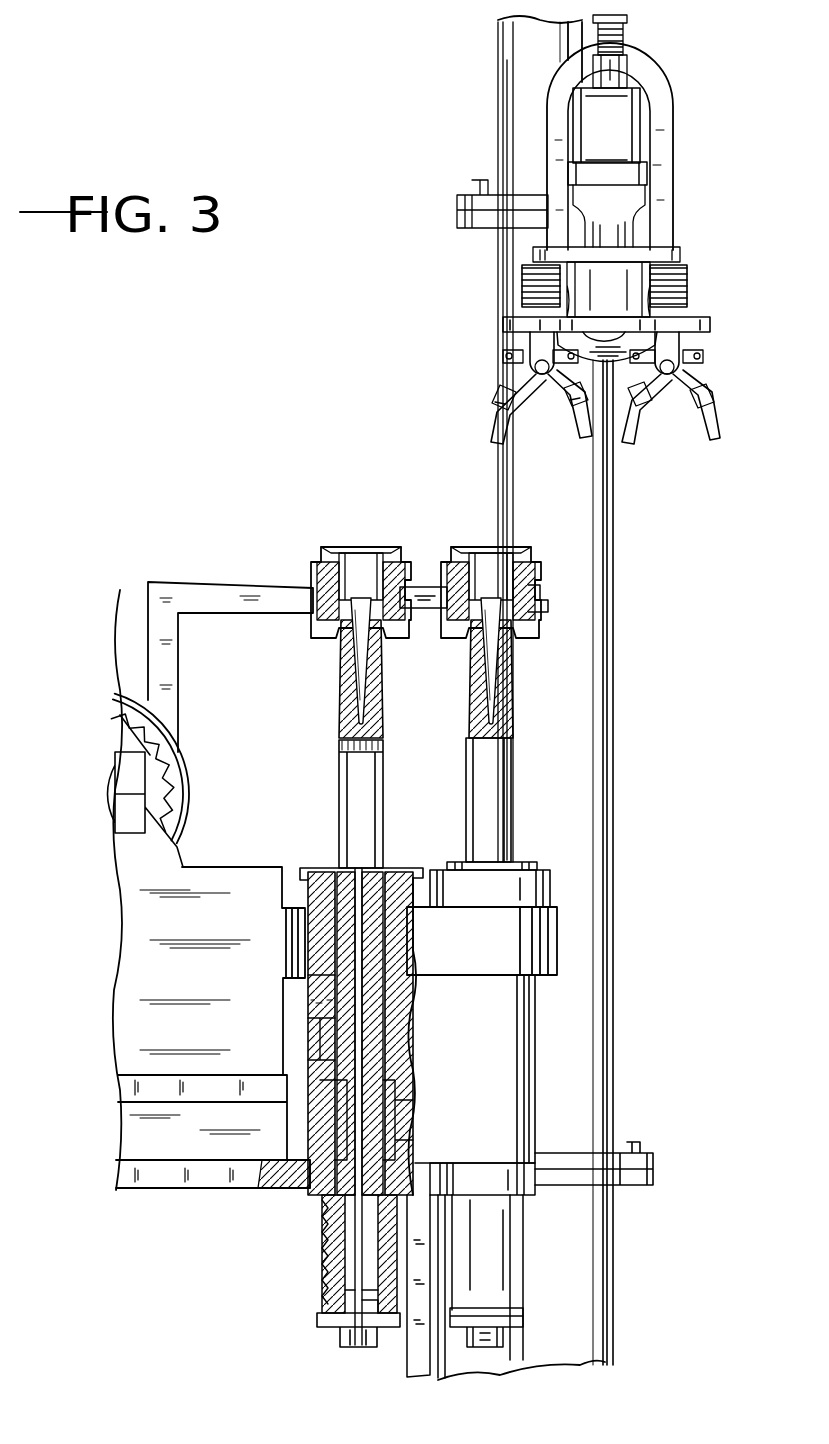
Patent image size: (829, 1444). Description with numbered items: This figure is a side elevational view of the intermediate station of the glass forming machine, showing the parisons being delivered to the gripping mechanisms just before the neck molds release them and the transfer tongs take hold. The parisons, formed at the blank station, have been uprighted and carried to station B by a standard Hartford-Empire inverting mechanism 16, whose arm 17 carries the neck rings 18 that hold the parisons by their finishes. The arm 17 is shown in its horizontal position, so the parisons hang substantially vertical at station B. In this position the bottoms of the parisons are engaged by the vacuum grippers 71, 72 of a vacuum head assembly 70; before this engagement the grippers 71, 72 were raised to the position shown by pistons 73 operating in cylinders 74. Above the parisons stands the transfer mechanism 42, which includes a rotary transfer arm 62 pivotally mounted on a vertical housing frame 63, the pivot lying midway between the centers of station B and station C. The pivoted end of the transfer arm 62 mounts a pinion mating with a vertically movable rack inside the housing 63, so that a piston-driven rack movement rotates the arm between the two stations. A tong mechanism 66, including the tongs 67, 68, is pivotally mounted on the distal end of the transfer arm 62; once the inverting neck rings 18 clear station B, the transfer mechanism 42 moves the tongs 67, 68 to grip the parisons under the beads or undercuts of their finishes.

The inverting mechanism 16 is at (188, 778).
The arm 17 is at (180, 580).
The neck rings 18 is at (312, 562).
The transfer mechanism 42 is at (519, 439).
The rotary transfer arm 62 is at (673, 162).
The vertical housing frame 63 is at (577, 862).
The tong mechanism 66 is at (607, 131).
The tong 67 is at (498, 378).
The tong 68 is at (710, 378).
The vacuum head assembly 70 is at (530, 1121).
The vacuum gripper 71 is at (386, 748).
The vacuum gripper 72 is at (511, 740).
The pistons 73 is at (405, 1078).
The cylinders 74 is at (408, 1145).